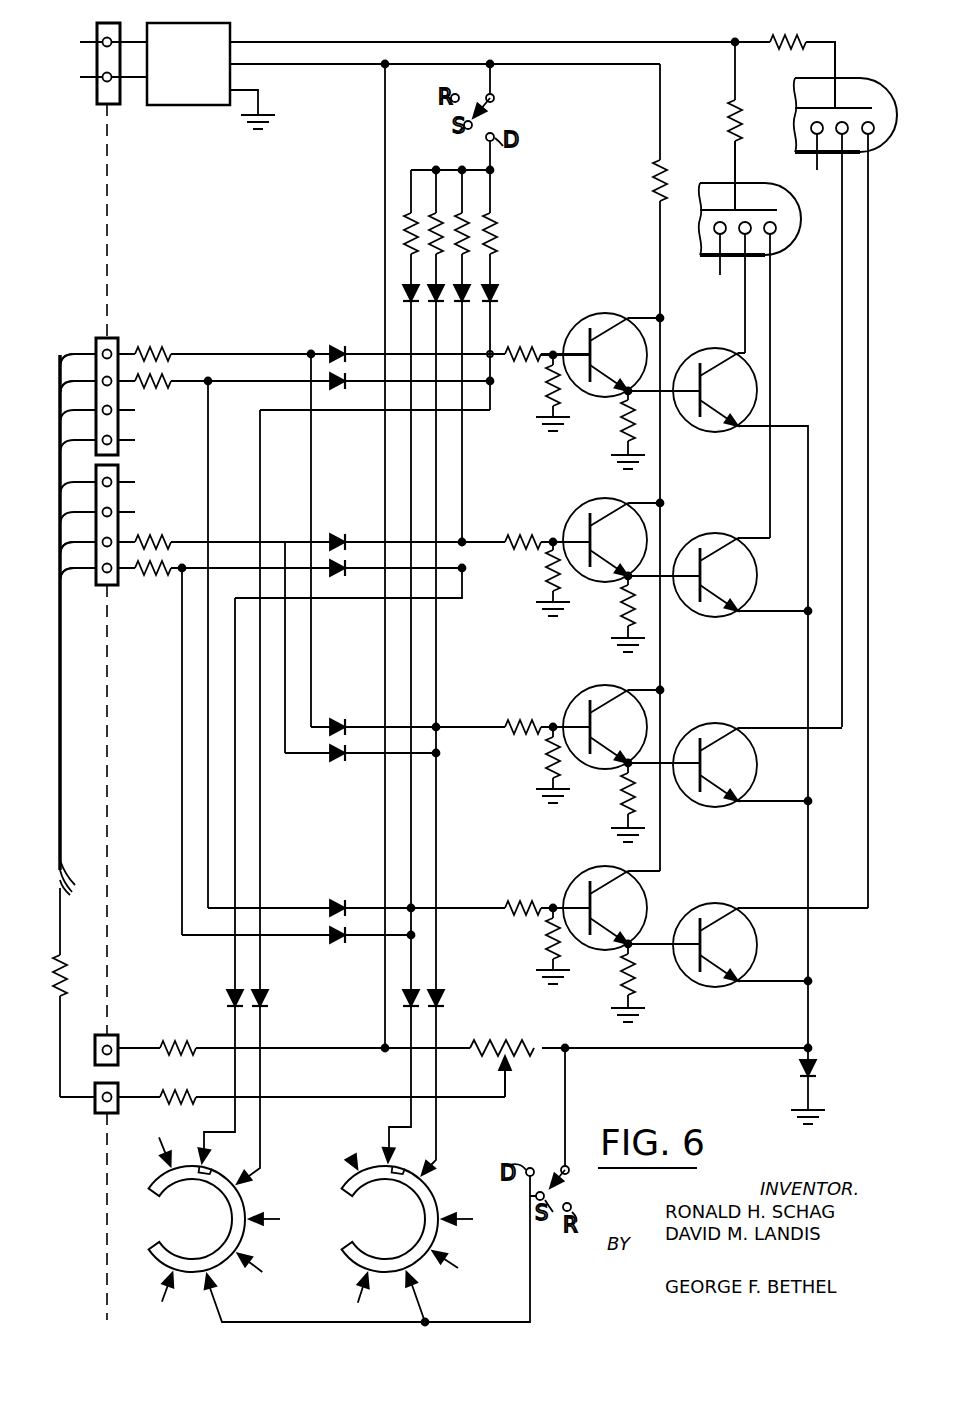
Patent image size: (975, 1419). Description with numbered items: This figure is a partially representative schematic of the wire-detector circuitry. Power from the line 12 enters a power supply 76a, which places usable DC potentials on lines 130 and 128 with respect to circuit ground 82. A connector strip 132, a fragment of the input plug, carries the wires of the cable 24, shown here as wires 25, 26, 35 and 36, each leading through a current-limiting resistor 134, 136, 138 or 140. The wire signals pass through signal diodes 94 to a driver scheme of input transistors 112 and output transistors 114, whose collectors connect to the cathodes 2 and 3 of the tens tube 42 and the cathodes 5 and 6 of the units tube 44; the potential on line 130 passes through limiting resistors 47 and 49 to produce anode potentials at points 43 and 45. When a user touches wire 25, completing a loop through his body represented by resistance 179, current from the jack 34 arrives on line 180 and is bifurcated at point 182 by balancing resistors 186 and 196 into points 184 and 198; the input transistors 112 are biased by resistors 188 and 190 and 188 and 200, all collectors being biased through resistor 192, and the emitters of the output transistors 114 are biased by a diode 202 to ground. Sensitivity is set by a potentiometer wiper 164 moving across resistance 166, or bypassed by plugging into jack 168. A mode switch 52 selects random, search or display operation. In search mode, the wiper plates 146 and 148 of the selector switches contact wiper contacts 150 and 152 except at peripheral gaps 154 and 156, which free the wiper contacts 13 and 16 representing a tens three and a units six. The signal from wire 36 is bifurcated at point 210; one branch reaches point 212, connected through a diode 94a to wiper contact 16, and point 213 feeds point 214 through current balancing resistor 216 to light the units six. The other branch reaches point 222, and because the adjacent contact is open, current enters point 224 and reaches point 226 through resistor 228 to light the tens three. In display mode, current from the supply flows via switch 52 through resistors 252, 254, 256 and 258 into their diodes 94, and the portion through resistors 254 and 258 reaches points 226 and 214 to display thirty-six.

The line 12 is at (125, 36).
The power supply 76a is at (188, 64).
The circuit ground 82 is at (260, 103).
The line 130 is at (329, 42).
The line 128 is at (352, 70).
The mode switch 52 is at (494, 100).
The limiting resistor 49 is at (791, 40).
The point 45 is at (835, 62).
The units tube 44 is at (852, 80).
The limiting resistor 47 is at (740, 114).
The point 43 is at (735, 183).
The tens tube 42 is at (792, 190).
The cathode 5 is at (845, 130).
The cathode 6 is at (870, 130).
The cathode 2 is at (745, 232).
The cathode 3 is at (770, 232).
The resistor 192 is at (657, 186).
The resistor 256 is at (436, 215).
The resistor 258 is at (411, 228).
The resistor 254 is at (462, 215).
The resistor 252 is at (490, 235).
The diode 94 is at (411, 288).
The input transistor 112 is at (645, 318).
The output transistor 114 is at (740, 352).
The point 184 is at (553, 352).
The balancing resistor 186 is at (521, 352).
The resistor 188 is at (548, 395).
The resistor 190 is at (640, 425).
The resistor 200 is at (620, 800).
The point 224 is at (468, 538).
The point 226 is at (553, 538).
The resistor 228 is at (537, 522).
The point 222 is at (485, 570).
The point 198 is at (553, 725).
The balancing resistor 196 is at (440, 730).
The current balancing resistor 216 is at (515, 905).
The point 214 is at (553, 905).
The point 213 is at (415, 905).
The point 212 is at (415, 935).
The connector strip 132 is at (98, 340).
The resistor 134 is at (162, 350).
The resistor 136 is at (150, 385).
The resistor 138 is at (150, 540).
The resistor 140 is at (160, 575).
The wire 25 is at (60, 352).
The wire 26 is at (67, 380).
The wire 35 is at (65, 542).
The wire 36 is at (68, 572).
The cable 24 is at (58, 645).
The point 210 is at (180, 575).
The line 180 is at (215, 380).
The point 182 is at (313, 352).
The resistance 179 is at (80, 985).
The jack 168 is at (95, 1048).
The jack 34 is at (96, 1100).
The diode 94a is at (233, 990).
The resistance 166 is at (485, 1045).
The potentiometer wiper 164 is at (510, 1068).
The diode 202 is at (815, 1072).
The wiper plate 146 is at (160, 1175).
The wiper plate 148 is at (350, 1157).
The wiper contacts 150 is at (272, 1219).
The wiper contacts 152 is at (428, 1176).
The peripheral gap 154 is at (200, 1160).
The wiper contact 13 is at (215, 1163).
The wiper contact 16 is at (385, 1158).
The peripheral gap 156 is at (390, 1162).